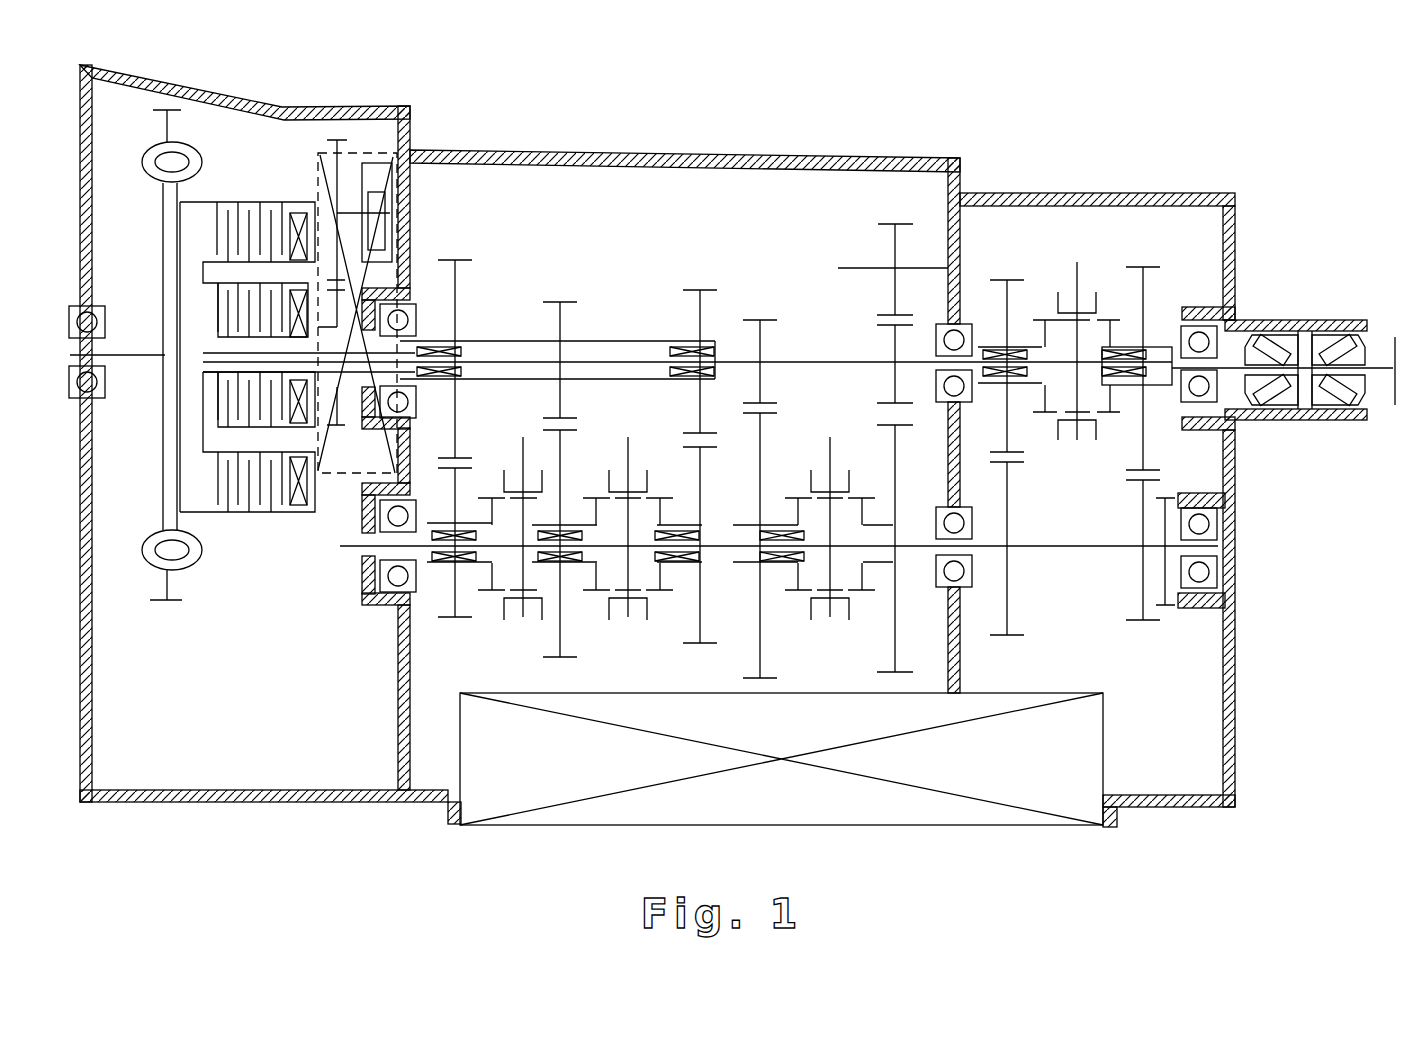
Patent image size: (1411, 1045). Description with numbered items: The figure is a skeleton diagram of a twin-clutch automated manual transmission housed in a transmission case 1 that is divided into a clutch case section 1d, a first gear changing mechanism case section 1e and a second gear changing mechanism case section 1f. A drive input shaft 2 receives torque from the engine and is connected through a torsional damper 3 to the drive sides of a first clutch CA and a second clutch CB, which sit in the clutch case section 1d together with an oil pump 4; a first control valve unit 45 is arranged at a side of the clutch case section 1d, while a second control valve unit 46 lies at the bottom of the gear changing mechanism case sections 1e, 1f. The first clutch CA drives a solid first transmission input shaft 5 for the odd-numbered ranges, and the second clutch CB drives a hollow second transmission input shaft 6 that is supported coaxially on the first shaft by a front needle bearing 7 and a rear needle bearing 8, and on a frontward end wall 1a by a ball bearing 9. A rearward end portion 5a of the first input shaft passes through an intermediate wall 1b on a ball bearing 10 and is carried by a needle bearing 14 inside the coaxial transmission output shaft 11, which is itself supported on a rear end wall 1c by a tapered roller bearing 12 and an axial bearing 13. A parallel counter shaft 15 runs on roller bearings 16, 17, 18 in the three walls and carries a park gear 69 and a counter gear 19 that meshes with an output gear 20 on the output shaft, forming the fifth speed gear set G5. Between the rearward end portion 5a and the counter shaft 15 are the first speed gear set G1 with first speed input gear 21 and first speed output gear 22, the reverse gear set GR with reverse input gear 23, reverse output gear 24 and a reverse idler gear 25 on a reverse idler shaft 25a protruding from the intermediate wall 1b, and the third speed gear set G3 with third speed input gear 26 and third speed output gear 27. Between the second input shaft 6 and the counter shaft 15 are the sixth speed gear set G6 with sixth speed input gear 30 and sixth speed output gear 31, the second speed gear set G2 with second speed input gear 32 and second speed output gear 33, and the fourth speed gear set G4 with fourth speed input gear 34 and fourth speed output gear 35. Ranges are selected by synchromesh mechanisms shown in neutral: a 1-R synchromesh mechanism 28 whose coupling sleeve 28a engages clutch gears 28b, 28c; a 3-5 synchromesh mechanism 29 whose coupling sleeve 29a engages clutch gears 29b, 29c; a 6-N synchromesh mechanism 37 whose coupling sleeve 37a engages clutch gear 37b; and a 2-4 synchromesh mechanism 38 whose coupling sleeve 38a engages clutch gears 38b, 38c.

The transmission case 1 is at (1002, 190).
The frontward end wall 1a is at (410, 200).
The intermediate wall 1b is at (960, 230).
The rear end wall 1c is at (1235, 215).
The clutch case section 1d is at (228, 98).
The first gear changing mechanism case section 1e is at (570, 150).
The second gear changing mechanism case section 1f is at (1095, 193).
The drive input shaft 2 is at (128, 352).
The torsional damper 3 is at (142, 160).
The oil pump 4 is at (378, 163).
The first transmission input shaft 5 is at (495, 360).
The rearward end portion 5a is at (790, 362).
The second transmission input shaft 6 is at (600, 341).
The front needle bearing 7 is at (437, 346).
The rear needle bearing 8 is at (690, 346).
The ball bearing 9 is at (410, 304).
The ball bearing 10 is at (960, 326).
The transmission output shaft 11 is at (1380, 345).
The tapered roller bearing 12 is at (1200, 326).
The axial bearing 13 is at (1285, 333).
The needle bearing 14 is at (1132, 386).
The counter shaft 15 is at (1080, 547).
The roller bearing 16 is at (408, 580).
The roller bearing 17 is at (962, 585).
The roller bearing 18 is at (1210, 573).
The counter gear 19 is at (1145, 622).
The output gear 20 is at (1145, 266).
The first speed input gear 21 is at (757, 318).
The first speed output gear 22 is at (757, 678).
The reverse input gear 23 is at (892, 350).
The reverse output gear 24 is at (898, 672).
The reverse idler gear 25 is at (893, 250).
The reverse idler shaft 25a is at (858, 268).
The third speed input gear 26 is at (1004, 279).
The third speed output gear 27 is at (1005, 637).
The 1-R synchromesh mechanism 28 is at (832, 625).
The coupling sleeve 28a is at (810, 622).
The clutch gear 28b is at (797, 592).
The clutch gear 28c is at (863, 592).
The 3-5 synchromesh mechanism 29 is at (1078, 445).
The coupling sleeve 29a is at (1072, 445).
The clutch gear 29b is at (1042, 415).
The clutch gear 29c is at (1110, 414).
The sixth speed input gear 30 is at (455, 300).
The sixth speed output gear 31 is at (446, 620).
The second speed input gear 32 is at (556, 300).
The second speed output gear 33 is at (560, 658).
The fourth speed input gear 34 is at (696, 289).
The fourth speed output gear 35 is at (704, 645).
The 6-N synchromesh mechanism 37 is at (525, 625).
The coupling sleeve 37a is at (500, 620).
The clutch gear 37b is at (492, 592).
The 2-4 synchromesh mechanism 38 is at (630, 625).
The coupling sleeve 38a is at (608, 622).
The clutch gear 38b is at (596, 592).
The clutch gear 38c is at (661, 592).
The first control valve unit 45 is at (337, 475).
The second control valve unit 46 is at (1040, 827).
The park gear 69 is at (1168, 607).
The first clutch CA is at (262, 202).
The second clutch CB is at (218, 423).
The first speed gear set G1 is at (762, 318).
The second speed gear set G2 is at (562, 300).
The third speed gear set G3 is at (1010, 278).
The fourth speed gear set G4 is at (702, 288).
The fifth speed gear set G5 is at (1140, 265).
The sixth speed gear set G6 is at (456, 258).
The reverse gear set GR is at (893, 222).